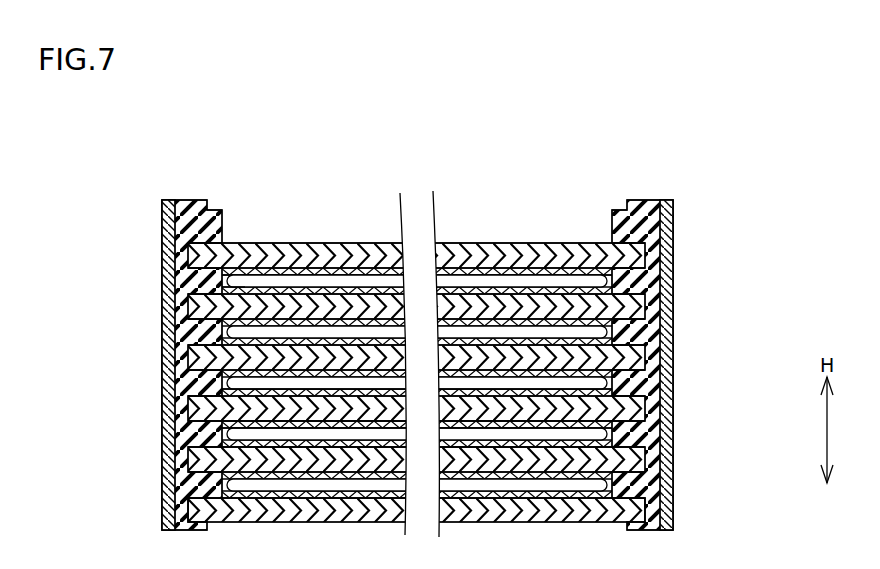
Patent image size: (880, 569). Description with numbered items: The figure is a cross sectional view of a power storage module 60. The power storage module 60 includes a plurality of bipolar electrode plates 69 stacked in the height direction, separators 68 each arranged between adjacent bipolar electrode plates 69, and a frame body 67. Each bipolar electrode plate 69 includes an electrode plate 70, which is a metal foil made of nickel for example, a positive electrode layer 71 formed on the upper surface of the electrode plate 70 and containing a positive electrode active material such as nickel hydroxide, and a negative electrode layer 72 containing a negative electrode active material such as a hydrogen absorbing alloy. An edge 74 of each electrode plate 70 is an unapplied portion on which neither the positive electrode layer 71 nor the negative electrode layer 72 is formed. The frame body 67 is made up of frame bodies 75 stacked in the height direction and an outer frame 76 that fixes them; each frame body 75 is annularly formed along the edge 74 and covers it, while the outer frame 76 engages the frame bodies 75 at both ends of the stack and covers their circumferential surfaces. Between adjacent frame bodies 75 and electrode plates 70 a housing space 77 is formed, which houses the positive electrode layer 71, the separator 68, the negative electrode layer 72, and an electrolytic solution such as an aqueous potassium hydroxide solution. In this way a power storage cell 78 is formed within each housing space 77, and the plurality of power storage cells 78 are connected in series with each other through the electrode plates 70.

The power storage module 60 is at (510, 190).
The frame body 67 is at (748, 228).
The separator 68 is at (238, 331).
The bipolar electrode plate 69 is at (750, 375).
The electrode plate 70 is at (635, 410).
The positive electrode layer 71 is at (575, 390).
The negative electrode layer 72 is at (585, 422).
The edge 74 is at (648, 513).
The frame body 75 is at (647, 247).
The outer frame 76 is at (665, 279).
The housing space 77 is at (228, 289).
The power storage cell 78 is at (83, 400).